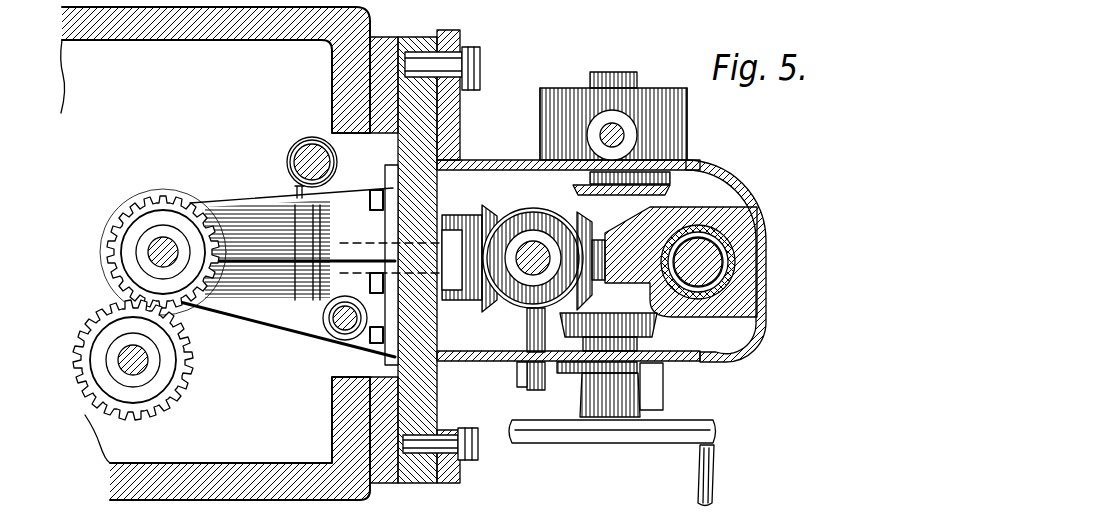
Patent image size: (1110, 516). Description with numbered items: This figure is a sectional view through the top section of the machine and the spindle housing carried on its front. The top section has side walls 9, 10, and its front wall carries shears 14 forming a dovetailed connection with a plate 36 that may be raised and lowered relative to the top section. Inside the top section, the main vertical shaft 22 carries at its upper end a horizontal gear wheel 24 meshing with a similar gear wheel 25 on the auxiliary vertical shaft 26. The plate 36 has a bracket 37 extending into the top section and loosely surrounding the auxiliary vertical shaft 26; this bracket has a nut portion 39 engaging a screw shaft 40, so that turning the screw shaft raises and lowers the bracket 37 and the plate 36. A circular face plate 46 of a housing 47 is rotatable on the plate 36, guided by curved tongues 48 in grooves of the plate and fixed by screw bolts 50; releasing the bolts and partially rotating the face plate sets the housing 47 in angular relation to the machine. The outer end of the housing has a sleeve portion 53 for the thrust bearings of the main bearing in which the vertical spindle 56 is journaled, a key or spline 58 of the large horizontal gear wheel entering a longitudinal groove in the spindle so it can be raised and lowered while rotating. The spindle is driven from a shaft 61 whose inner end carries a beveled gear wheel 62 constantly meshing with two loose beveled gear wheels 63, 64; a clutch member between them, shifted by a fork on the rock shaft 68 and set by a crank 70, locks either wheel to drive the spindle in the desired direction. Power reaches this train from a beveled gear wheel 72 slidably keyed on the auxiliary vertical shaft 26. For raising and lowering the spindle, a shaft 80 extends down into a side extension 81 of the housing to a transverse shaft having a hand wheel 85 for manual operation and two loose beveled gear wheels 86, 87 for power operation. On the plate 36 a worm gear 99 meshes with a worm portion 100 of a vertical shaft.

The side wall 9 is at (185, 470).
The side wall 10 is at (148, 42).
The shears 14 is at (375, 137).
The main vertical shaft 22 is at (127, 350).
The horizontal gear wheel 24 is at (88, 390).
The gear wheel 25 is at (178, 200).
The auxiliary vertical shaft 26 is at (157, 248).
The plate 36 is at (382, 37).
The bracket 37 is at (242, 312).
The nut portion 39 is at (332, 340).
The screw shaft 40 is at (333, 330).
The circular face plate 46 is at (463, 33).
The housing 47 is at (515, 167).
The curved tongues 48 is at (437, 133).
The screw bolts 50 is at (475, 462).
The sleeve portion 53 is at (740, 293).
The vertical spindle 56 is at (707, 247).
The key or spline 58 is at (737, 248).
The shaft 61 is at (527, 250).
The beveled gear wheel 62 is at (533, 222).
The beveled gear wheel 63 is at (483, 212).
The beveled gear wheel 64 is at (560, 310).
The rock shaft 68 is at (535, 335).
The crank 70 is at (567, 375).
The beveled gear wheel 72 is at (100, 252).
The shaft 80 is at (607, 130).
The side extension 81 is at (655, 105).
The hand wheel 85 is at (608, 432).
The beveled gear wheel 86 is at (667, 183).
The beveled gear wheel 87 is at (670, 330).
The worm gear 99 is at (297, 192).
The worm portion 100 is at (308, 153).